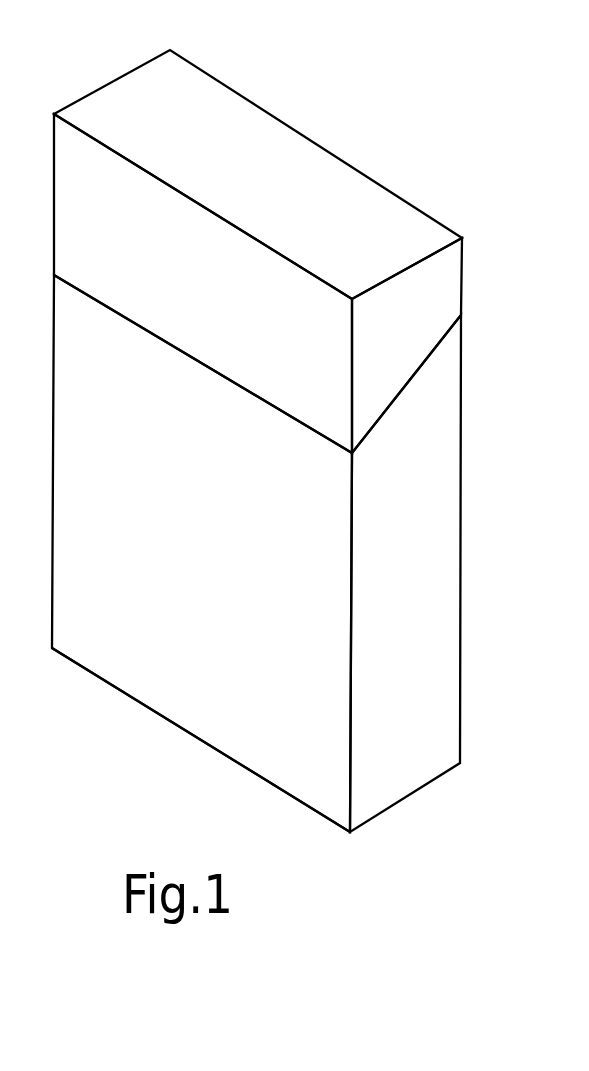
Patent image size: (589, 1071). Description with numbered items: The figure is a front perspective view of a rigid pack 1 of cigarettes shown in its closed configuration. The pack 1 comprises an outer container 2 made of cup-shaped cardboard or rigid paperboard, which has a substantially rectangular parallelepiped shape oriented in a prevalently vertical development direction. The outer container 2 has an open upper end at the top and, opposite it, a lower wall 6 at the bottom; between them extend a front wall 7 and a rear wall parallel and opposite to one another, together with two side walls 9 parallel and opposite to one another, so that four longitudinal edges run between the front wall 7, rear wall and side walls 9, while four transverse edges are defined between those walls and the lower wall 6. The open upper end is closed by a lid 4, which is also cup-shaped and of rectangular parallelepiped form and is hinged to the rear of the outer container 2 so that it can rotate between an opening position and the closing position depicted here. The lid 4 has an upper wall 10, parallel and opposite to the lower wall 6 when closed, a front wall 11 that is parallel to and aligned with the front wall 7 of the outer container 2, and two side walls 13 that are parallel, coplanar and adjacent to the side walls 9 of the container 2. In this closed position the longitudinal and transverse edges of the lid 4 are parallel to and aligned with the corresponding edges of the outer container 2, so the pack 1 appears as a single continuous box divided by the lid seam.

The pack of cigarettes 1 is at (438, 817).
The outer container 2 is at (492, 530).
The lid 4 is at (483, 254).
The lower wall 6 is at (153, 714).
The front wall 7 is at (189, 546).
The side walls 9 is at (399, 611).
The upper wall 10 is at (278, 188).
The front wall 11 is at (183, 300).
The side walls 13 is at (388, 334).